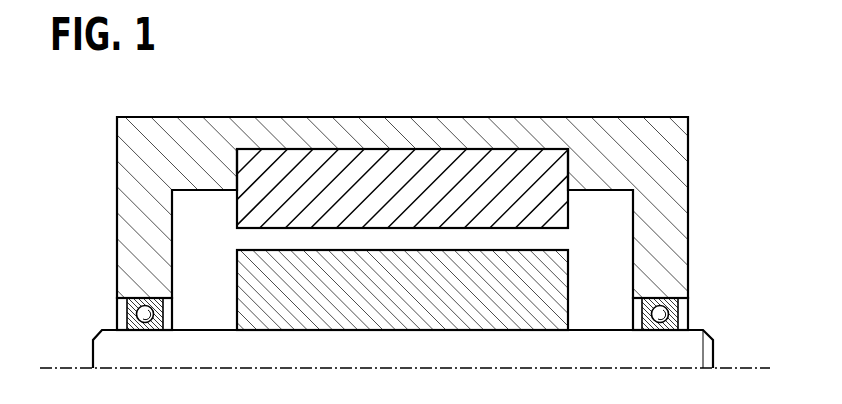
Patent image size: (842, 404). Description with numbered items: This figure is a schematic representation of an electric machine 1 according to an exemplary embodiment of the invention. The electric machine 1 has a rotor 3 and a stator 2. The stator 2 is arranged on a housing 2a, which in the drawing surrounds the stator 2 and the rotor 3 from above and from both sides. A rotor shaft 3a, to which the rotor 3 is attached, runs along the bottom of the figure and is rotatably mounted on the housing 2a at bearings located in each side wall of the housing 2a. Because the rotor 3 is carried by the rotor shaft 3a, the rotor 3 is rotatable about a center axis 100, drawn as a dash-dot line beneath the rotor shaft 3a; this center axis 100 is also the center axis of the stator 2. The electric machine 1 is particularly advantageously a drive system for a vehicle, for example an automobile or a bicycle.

The electric machine 1 is at (700, 106).
The stator 2 is at (553, 205).
The housing 2a is at (663, 153).
The rotor 3 is at (553, 268).
The rotor shaft 3a is at (690, 348).
The center axis 100 is at (73, 368).